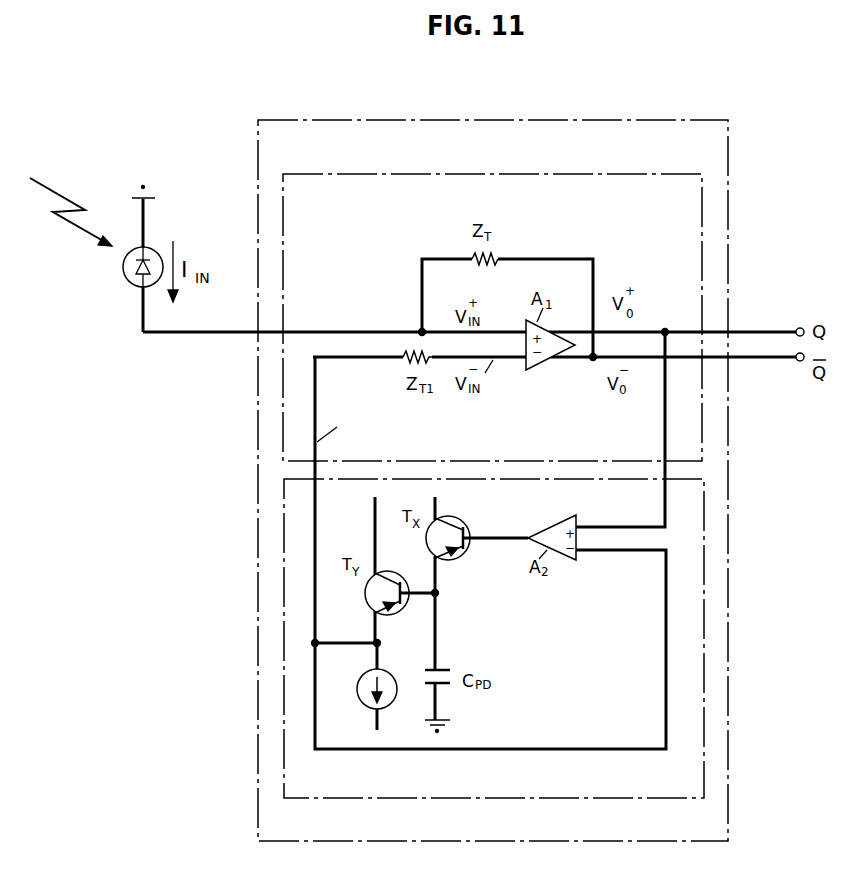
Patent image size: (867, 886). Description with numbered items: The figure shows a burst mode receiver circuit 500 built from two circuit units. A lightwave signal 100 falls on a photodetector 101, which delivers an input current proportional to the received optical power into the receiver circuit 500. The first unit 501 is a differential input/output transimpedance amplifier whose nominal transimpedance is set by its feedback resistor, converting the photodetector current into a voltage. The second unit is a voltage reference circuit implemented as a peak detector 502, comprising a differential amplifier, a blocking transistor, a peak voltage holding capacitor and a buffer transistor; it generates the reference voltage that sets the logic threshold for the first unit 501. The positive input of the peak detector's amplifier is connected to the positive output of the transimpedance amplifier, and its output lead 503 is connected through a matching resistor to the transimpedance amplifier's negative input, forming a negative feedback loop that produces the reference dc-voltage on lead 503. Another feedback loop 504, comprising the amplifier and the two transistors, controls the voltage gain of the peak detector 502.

The lightwave signal 100 is at (67, 194).
The photodetector 101 is at (132, 283).
The receiver circuit 500 is at (350, 120).
The first unit 501 is at (500, 174).
The peak detector 502 is at (480, 800).
The output lead 503 is at (317, 402).
The feedback loop 504 is at (567, 747).